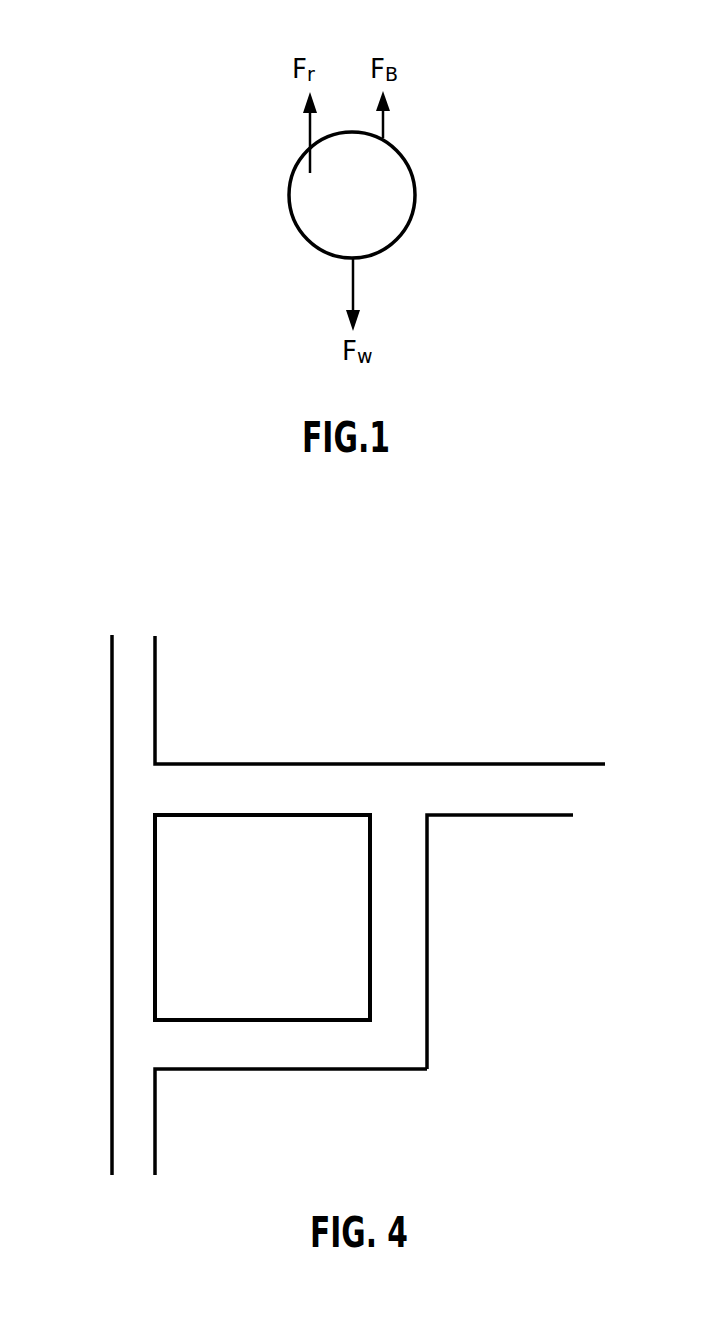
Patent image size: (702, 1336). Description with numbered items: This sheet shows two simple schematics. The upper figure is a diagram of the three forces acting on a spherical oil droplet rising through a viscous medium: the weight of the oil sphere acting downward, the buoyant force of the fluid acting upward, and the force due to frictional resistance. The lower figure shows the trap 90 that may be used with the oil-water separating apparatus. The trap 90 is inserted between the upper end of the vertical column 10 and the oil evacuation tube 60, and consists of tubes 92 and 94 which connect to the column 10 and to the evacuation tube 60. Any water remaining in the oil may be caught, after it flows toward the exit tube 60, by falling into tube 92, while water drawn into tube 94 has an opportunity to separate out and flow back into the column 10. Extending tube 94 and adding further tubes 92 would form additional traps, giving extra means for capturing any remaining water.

The vertical column 10 is at (112, 912).
The evacuation tube 60 is at (552, 772).
The trap 90 is at (498, 1048).
The tube 92 is at (417, 921).
The tube 94 is at (303, 1064).